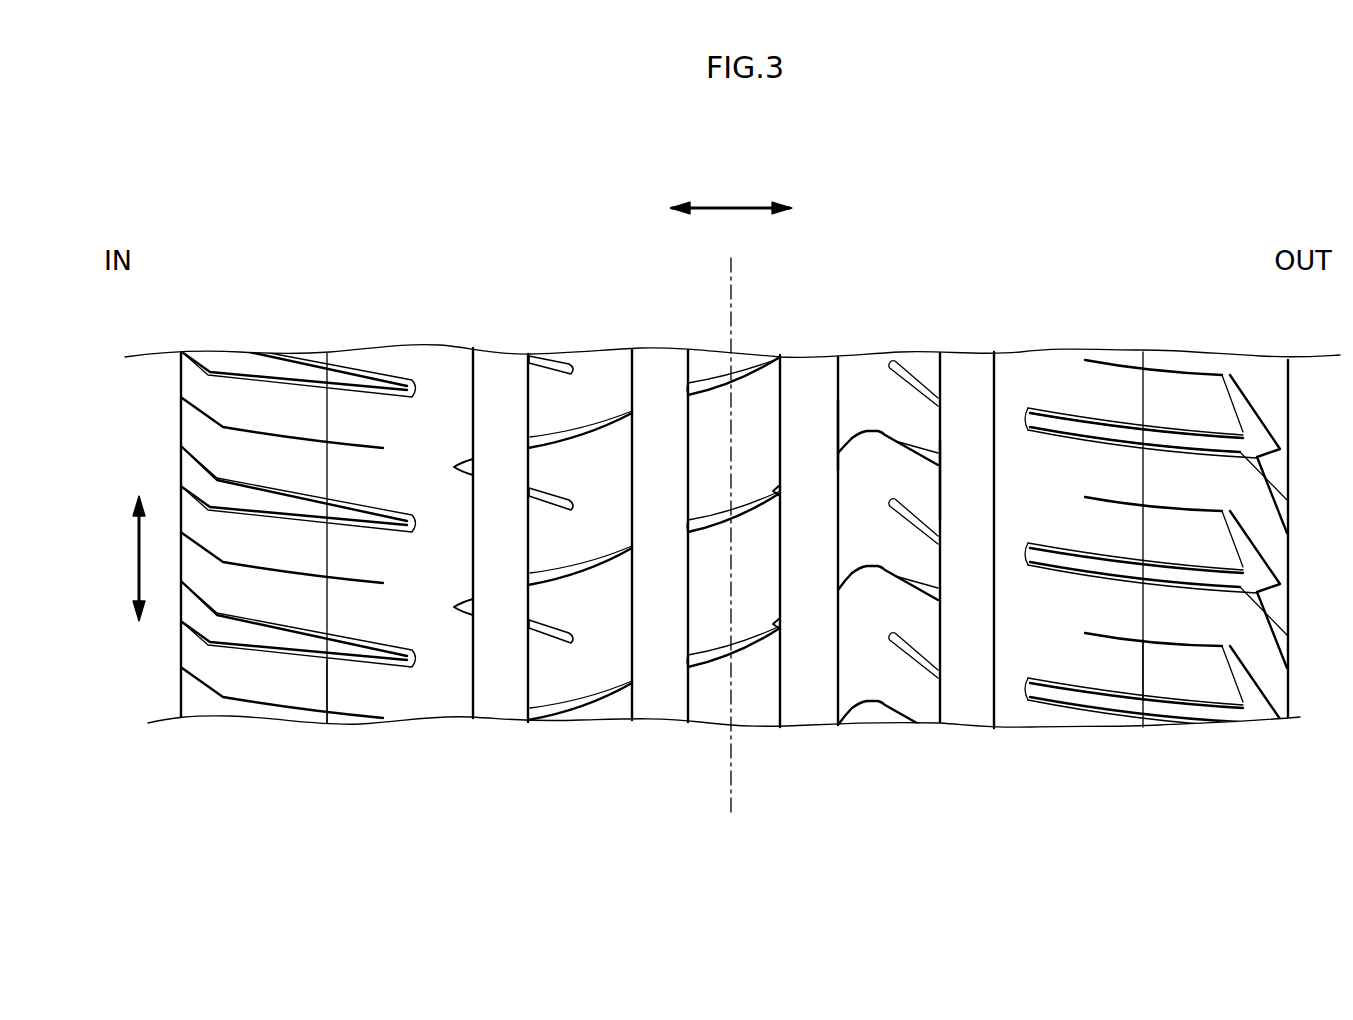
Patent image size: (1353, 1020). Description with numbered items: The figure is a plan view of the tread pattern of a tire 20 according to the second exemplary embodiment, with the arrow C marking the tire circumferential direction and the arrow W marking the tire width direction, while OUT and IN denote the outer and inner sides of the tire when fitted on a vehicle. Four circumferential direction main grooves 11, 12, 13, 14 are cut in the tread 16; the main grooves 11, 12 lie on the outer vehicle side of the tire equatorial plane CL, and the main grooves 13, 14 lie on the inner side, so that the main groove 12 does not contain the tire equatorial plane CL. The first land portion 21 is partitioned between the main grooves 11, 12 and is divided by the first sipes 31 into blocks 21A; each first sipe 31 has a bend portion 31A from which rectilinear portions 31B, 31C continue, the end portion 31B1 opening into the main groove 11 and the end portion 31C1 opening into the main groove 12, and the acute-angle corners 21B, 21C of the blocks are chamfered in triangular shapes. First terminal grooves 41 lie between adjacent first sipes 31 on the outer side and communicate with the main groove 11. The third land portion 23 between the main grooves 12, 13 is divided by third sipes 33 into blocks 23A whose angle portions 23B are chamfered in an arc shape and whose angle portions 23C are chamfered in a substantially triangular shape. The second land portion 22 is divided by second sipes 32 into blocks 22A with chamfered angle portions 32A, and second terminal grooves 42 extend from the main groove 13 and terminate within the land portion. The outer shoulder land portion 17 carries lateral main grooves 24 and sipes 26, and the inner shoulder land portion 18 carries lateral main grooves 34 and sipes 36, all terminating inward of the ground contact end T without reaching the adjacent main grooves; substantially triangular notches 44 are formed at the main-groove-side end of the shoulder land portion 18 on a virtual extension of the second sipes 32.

The tire 20 is at (945, 195).
The tread 16 is at (945, 273).
The shoulder land portion 18 is at (178, 340).
The circumferential direction main groove 14 is at (494, 370).
The second land portion 22 is at (632, 340).
The circumferential direction main groove 13 is at (653, 357).
The third land portion 23 is at (780, 340).
The circumferential direction main groove 12 is at (818, 356).
The first land portion 21 is at (835, 340).
The circumferential direction main groove 11 is at (968, 358).
The shoulder land portion 17 is at (994, 340).
The lateral main groove 34 is at (398, 520).
The sipe 36 is at (378, 579).
The block 22A is at (543, 517).
The angle portion 32A is at (537, 572).
The second sipe 32 is at (585, 572).
The second terminal groove 42 is at (530, 630).
The notch 44 is at (473, 612).
The block 23A is at (697, 455).
The angle portion 23C is at (697, 525).
The third sipe 33 is at (716, 532).
The angle portion 23B is at (782, 490).
The first sipe 31 is at (880, 445).
The bend portion 31A is at (872, 428).
The rectilinear portion 31B is at (900, 447).
The end portion 31B1 is at (942, 463).
The rectilinear portion 31C is at (838, 450).
The end portion 31C1 is at (840, 458).
The block 21A is at (935, 511).
The angle portion 21B is at (922, 447).
The angle portion 21C is at (838, 456).
The first terminal groove 41 is at (935, 528).
The sipe 26 is at (1105, 503).
The lateral main groove 24 is at (1057, 566).
The tire width direction W is at (725, 208).
The tire equatorial plane CL is at (734, 275).
The tire circumferential direction C is at (138, 558).
The ground contact end T is at (328, 682).